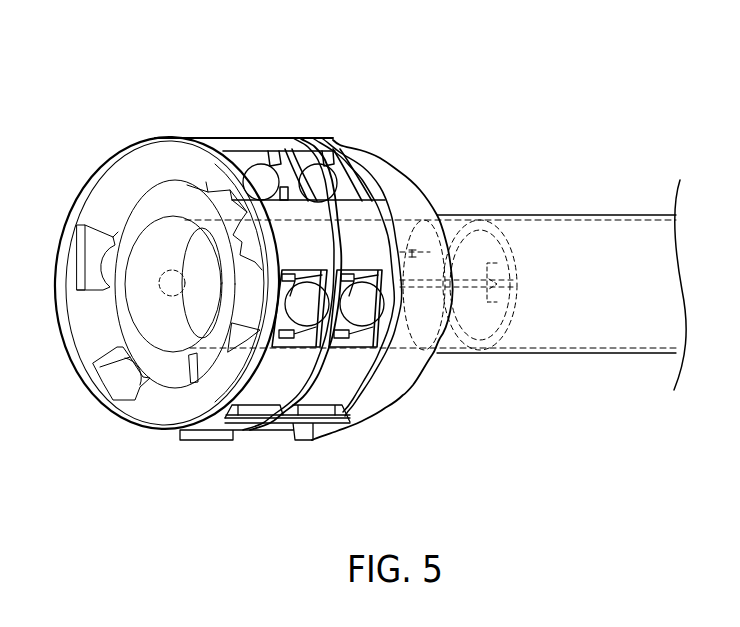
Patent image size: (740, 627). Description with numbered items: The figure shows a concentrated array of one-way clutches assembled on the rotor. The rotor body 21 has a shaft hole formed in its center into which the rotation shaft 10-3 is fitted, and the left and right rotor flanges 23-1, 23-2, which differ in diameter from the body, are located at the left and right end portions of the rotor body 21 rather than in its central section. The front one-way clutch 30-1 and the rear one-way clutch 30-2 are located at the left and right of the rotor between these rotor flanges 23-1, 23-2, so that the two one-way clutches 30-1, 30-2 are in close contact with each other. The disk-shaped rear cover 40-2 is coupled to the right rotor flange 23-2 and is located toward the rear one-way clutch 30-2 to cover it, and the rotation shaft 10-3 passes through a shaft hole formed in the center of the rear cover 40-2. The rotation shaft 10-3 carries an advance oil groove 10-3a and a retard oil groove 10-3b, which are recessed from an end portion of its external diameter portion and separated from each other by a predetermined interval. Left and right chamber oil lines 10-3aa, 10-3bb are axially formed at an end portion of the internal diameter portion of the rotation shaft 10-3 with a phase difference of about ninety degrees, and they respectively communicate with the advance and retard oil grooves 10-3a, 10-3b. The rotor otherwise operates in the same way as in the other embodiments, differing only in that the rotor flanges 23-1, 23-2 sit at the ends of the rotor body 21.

The left rotor flange 23-1 is at (113, 153).
The rotor body 21 is at (245, 160).
The right rotor flange 23-2 is at (337, 157).
The rear cover 40-2 is at (378, 162).
The front one-way clutch 30-1 is at (255, 357).
The rear one-way clutch 30-2 is at (323, 367).
The rotation shaft 10-3 is at (642, 242).
The advance oil groove 10-3a is at (423, 226).
The retard oil groove 10-3b is at (473, 226).
The left chamber oil line 10-3aa is at (412, 255).
The right chamber oil line 10-3bb is at (490, 302).